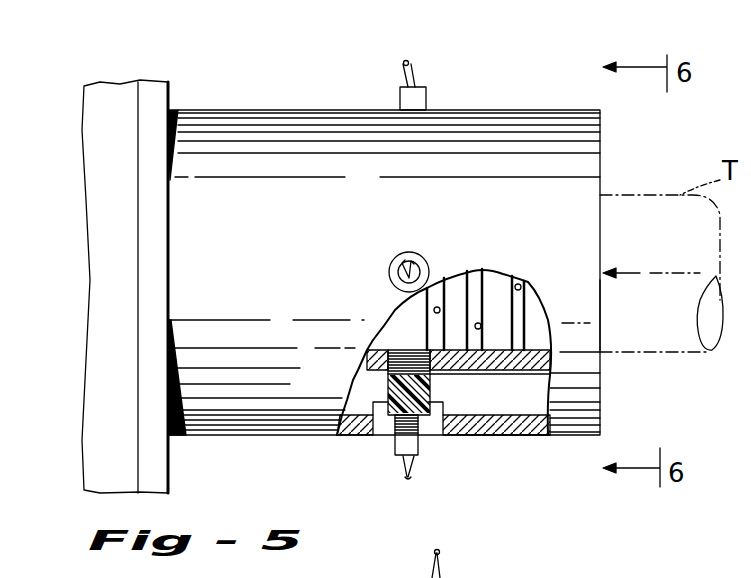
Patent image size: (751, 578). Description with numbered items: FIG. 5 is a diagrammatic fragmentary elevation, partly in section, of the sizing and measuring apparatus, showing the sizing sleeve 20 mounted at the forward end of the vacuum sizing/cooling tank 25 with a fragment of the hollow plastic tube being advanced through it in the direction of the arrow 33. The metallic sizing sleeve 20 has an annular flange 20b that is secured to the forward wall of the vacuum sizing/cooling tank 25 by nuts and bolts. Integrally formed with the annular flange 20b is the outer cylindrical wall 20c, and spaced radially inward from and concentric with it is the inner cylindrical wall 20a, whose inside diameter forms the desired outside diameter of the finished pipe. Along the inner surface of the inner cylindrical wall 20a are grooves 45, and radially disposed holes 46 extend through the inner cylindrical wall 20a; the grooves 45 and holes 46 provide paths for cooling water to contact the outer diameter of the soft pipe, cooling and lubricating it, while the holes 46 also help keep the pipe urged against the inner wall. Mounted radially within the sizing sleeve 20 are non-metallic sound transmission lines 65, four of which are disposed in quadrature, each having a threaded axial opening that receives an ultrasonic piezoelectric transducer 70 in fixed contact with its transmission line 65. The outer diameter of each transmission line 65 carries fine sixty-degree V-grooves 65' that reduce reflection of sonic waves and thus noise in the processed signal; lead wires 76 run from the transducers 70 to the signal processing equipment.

The vacuum sizing/cooling tank 25 is at (123, 88).
The sizing sleeve 20 is at (603, 155).
The inner cylindrical wall 20a is at (548, 335).
The annular flange 20b is at (172, 197).
The outer cylindrical wall 20c is at (495, 440).
The arrow 33 is at (640, 272).
The grooves 45 is at (490, 298).
The holes 46 is at (520, 372).
The sound transmission lines 65 is at (386, 326).
The V-grooves 65' is at (376, 315).
The transducers 70 is at (426, 98).
The lead wires 76 is at (420, 70).